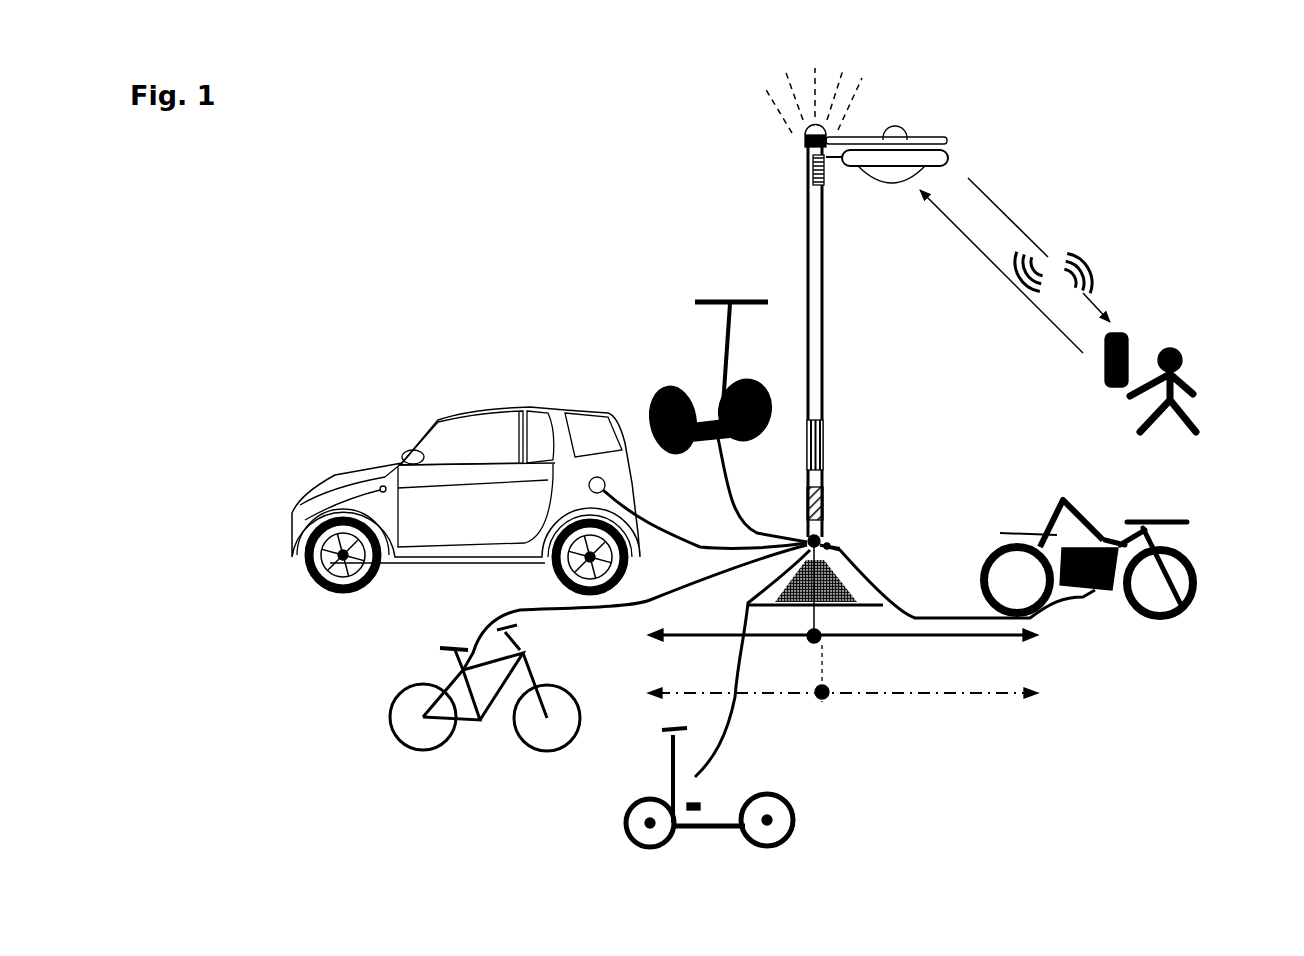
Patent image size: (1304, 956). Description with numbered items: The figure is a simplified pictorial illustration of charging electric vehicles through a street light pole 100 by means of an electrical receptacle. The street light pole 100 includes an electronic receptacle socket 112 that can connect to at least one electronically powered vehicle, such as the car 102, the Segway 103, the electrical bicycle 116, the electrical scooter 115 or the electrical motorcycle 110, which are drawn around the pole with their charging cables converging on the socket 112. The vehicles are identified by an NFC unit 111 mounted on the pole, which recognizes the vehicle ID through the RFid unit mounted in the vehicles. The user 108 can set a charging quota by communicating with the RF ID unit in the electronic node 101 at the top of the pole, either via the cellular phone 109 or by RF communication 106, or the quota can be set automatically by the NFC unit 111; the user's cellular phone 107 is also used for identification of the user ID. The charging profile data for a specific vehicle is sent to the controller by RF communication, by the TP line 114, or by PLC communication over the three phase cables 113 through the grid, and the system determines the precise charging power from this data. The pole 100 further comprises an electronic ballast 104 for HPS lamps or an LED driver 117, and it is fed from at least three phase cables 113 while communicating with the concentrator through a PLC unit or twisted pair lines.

The street light pole 100 is at (532, 150).
The electronic node 101 is at (795, 62).
The car 102 is at (475, 385).
The Segway 103 is at (726, 290).
The electronic ballast 104 is at (828, 445).
The RF communication 106 is at (1063, 242).
The cellular phone 107 is at (1120, 322).
The user 108 is at (1178, 328).
The cellular phone 109 is at (1103, 405).
The electrical motorcycle 110 is at (1160, 508).
The NFC unit 111 is at (840, 492).
The electronic socket 112 is at (840, 555).
The three phase cables 113 is at (1038, 648).
The TP line 114 is at (1028, 712).
The electrical scooter 115 is at (818, 826).
The electrical bicycle 116 is at (420, 780).
The LED driver 117 is at (802, 163).